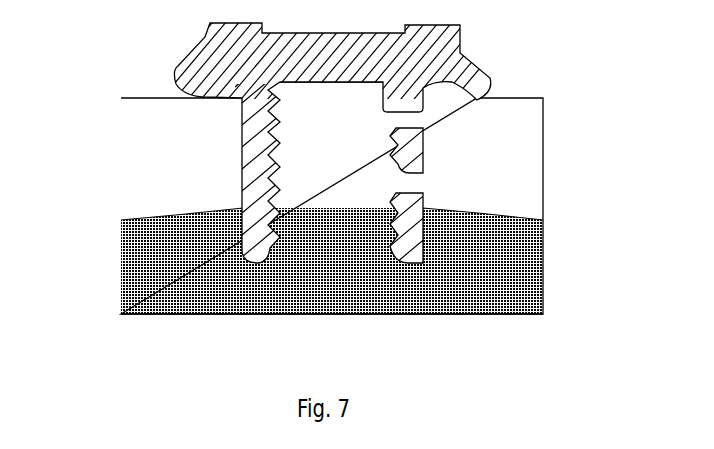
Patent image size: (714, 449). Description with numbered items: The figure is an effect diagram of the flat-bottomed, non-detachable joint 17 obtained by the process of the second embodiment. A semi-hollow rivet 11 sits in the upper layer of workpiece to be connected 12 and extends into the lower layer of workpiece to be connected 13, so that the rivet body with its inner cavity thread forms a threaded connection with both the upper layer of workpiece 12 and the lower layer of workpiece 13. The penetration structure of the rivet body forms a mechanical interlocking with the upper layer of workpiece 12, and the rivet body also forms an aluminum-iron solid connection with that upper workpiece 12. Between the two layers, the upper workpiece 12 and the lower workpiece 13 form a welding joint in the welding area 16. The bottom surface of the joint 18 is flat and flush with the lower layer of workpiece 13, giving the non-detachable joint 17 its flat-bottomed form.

The semi-hollow rivet 11 is at (428, 60).
The upper layer of workpiece to be connected 12 is at (147, 177).
The lower layer of workpiece to be connected 13 is at (153, 238).
The welding area 16 is at (350, 198).
The non-detachable joint 17 is at (148, 60).
The bottom surface of the joint 18 is at (226, 315).